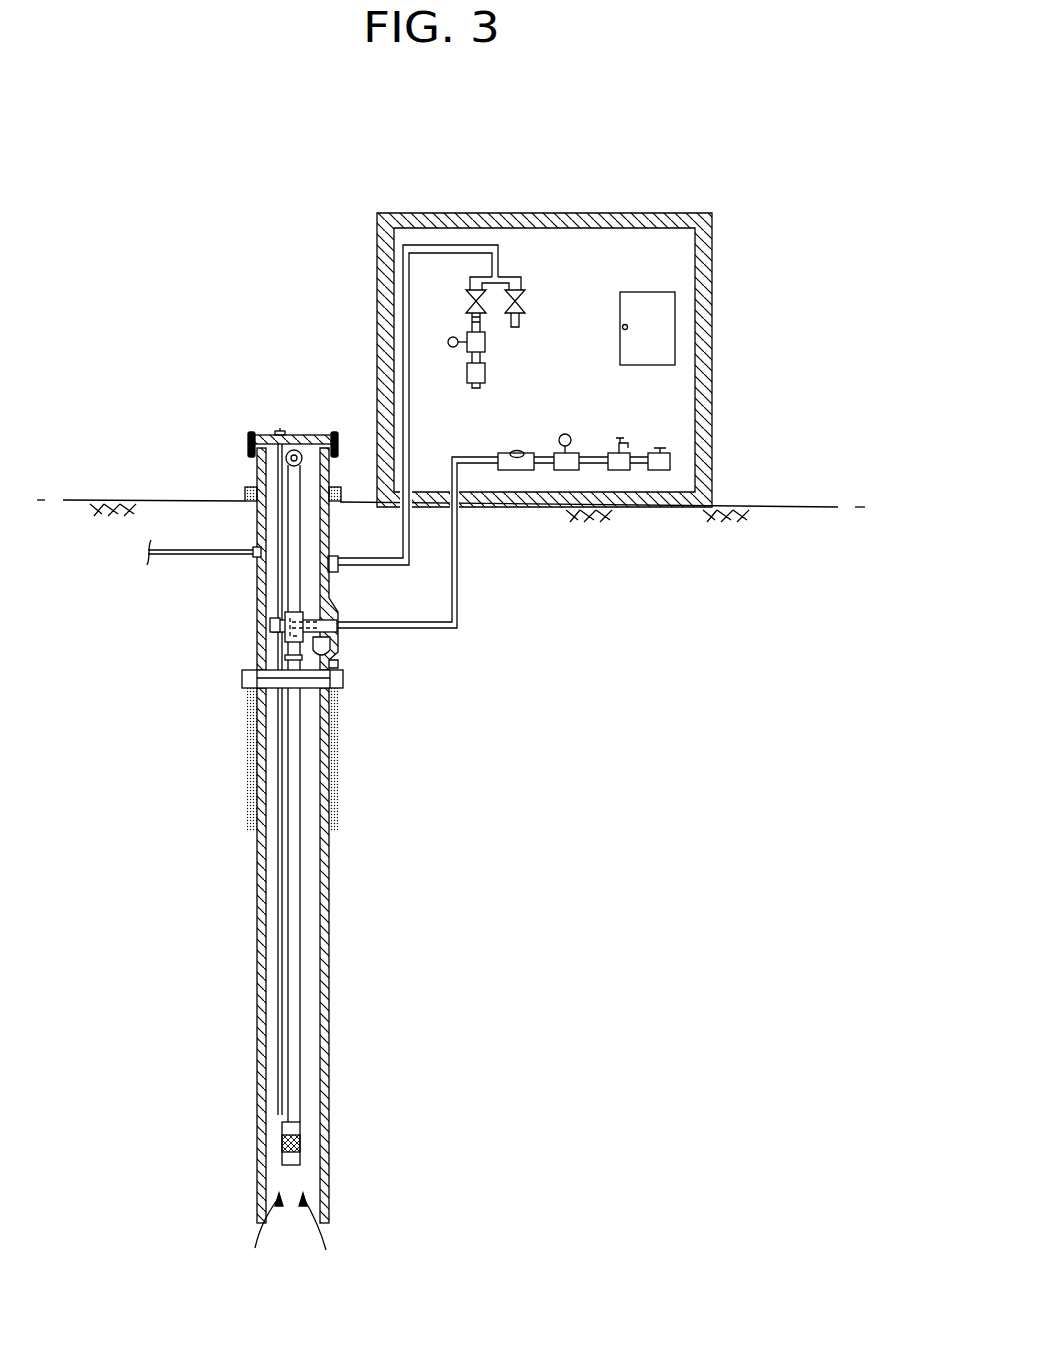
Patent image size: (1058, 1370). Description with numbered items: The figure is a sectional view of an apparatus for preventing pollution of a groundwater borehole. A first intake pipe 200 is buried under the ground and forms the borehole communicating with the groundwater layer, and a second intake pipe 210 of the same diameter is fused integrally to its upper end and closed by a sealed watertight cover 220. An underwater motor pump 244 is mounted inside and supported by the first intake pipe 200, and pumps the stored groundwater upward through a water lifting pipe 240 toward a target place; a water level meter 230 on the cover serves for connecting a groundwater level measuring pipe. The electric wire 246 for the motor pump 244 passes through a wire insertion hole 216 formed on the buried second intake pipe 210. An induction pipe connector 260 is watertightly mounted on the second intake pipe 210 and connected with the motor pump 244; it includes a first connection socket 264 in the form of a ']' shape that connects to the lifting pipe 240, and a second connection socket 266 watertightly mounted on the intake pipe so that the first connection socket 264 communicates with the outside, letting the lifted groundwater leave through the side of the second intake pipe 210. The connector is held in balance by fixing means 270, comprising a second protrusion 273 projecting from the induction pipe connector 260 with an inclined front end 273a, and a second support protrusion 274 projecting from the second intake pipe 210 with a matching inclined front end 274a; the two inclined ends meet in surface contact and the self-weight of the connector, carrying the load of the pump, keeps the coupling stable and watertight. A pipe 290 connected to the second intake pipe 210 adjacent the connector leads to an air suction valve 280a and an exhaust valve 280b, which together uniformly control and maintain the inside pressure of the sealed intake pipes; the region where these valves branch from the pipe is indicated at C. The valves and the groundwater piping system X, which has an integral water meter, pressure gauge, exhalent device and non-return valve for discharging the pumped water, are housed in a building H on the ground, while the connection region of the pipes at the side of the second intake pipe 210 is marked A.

The first intake pipe 200 is at (329, 907).
The second intake pipe 210 is at (258, 465).
The wire insertion hole 216 is at (255, 546).
The watertight cover 220 is at (334, 435).
The water level meter 230 is at (280, 430).
The water lifting pipe 240 is at (293, 782).
The underwater motor pump 244 is at (297, 1130).
The electric wire 246 is at (167, 553).
The induction pipe connector 260 is at (391, 682).
The first connection socket 264 is at (331, 641).
The second connection socket 266 is at (337, 663).
The fixing means 270 is at (222, 635).
The second protrusion 273 is at (272, 608).
The inclined front end 273a is at (271, 616).
The inclined front end 274a is at (286, 656).
The second support protrusion 274 is at (254, 677).
The air suction valve 280a is at (502, 343).
The exhaust valve 280b is at (521, 313).
The pipe 290 is at (405, 318).
The control pipe C is at (528, 278).
The groundwater piping system X is at (670, 450).
The junction A is at (341, 617).
The building H is at (712, 338).